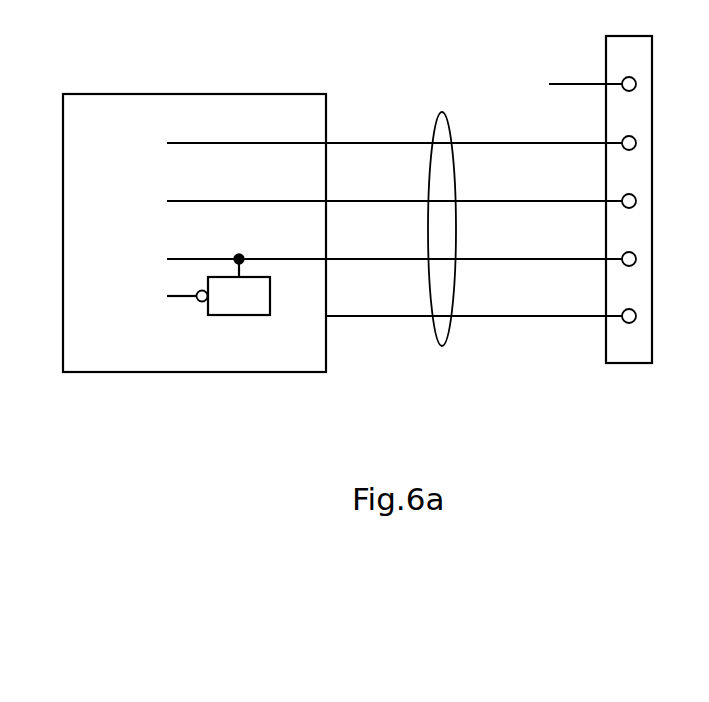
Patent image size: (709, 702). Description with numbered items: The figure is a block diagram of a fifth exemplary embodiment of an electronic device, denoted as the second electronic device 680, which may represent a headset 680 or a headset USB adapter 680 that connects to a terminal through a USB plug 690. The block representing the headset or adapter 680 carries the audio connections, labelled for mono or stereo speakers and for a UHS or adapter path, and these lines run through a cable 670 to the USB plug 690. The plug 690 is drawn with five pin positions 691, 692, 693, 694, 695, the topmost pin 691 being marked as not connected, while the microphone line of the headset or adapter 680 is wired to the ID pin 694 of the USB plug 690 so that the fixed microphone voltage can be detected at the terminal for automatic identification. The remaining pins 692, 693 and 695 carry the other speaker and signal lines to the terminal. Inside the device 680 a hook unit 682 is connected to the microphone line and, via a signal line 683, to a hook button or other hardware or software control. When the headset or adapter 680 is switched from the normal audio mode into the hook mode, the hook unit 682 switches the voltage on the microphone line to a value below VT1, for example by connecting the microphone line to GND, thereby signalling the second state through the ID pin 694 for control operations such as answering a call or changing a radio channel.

The second electronic device 680 is at (90, 372).
The hook unit 682 is at (253, 316).
The signal line 683 is at (178, 297).
The cable / connection bundle 670 is at (442, 346).
The USB plug 690 is at (628, 363).
The connector pin (N/C) 691 is at (587, 83).
The connector pin 692 is at (587, 141).
The connector pin 693 is at (587, 199).
The ID pin 694 is at (587, 256).
The connector pin 695 is at (587, 314).